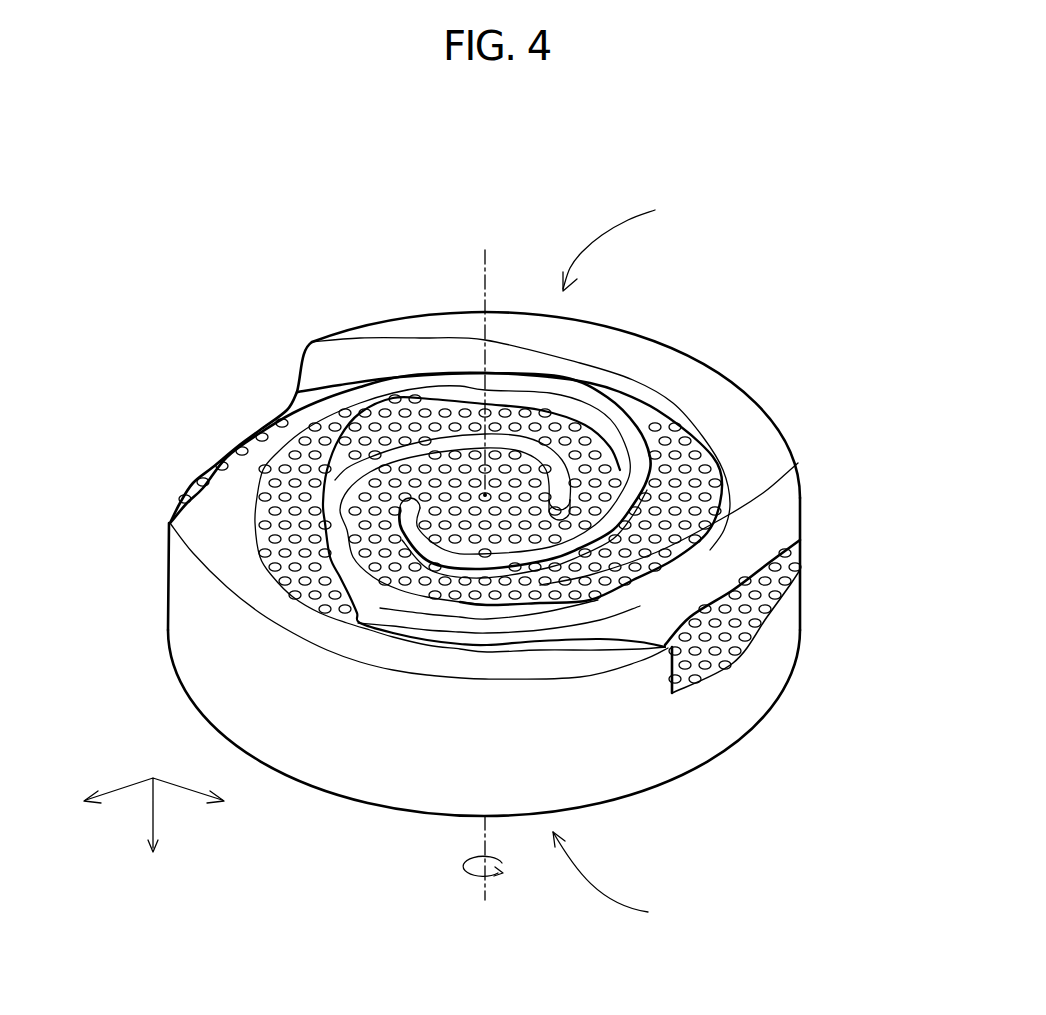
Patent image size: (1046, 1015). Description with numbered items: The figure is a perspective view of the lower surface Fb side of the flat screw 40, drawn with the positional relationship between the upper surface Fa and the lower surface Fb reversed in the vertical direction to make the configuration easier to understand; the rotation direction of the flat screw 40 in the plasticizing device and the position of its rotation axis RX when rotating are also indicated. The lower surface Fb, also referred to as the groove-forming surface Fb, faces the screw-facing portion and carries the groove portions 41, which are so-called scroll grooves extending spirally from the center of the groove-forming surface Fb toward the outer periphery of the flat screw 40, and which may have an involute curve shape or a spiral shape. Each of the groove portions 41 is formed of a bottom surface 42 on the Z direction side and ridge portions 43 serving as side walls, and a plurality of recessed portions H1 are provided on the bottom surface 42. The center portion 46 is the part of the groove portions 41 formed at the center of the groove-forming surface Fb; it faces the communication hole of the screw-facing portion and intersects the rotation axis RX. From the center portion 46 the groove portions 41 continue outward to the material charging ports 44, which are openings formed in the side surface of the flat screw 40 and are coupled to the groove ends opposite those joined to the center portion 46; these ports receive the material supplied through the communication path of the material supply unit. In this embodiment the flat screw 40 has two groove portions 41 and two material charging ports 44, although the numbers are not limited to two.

The flat screw 40 is at (167, 229).
The groove portions 41 is at (870, 318).
The bottom surface 42 is at (488, 474).
The ridge portions 43 is at (589, 522).
The material charging ports 44 is at (879, 630).
The center portion 46 is at (398, 373).
The recessed portions H1 is at (722, 662).
The rotation axis RX is at (488, 560).
The upper surface Fa is at (616, 881).
The lower surface Fb is at (628, 243).